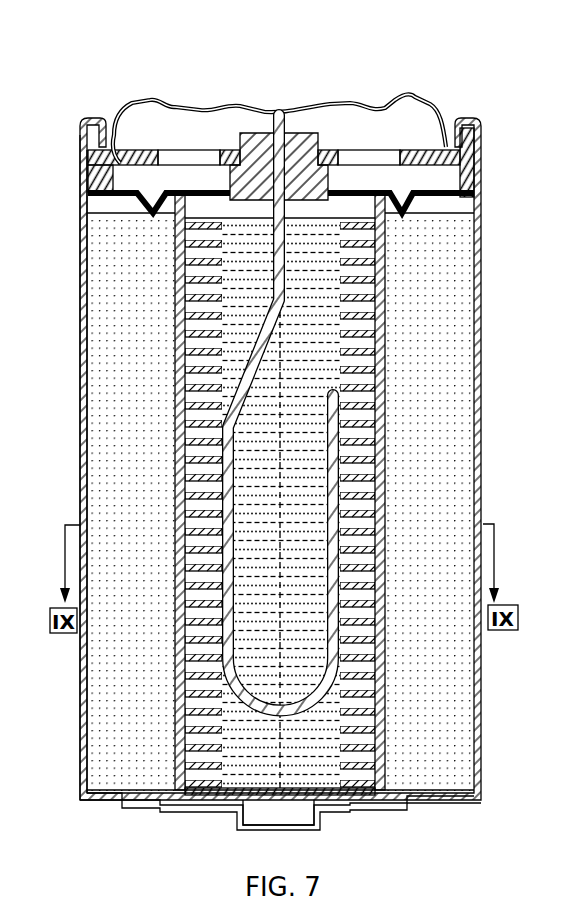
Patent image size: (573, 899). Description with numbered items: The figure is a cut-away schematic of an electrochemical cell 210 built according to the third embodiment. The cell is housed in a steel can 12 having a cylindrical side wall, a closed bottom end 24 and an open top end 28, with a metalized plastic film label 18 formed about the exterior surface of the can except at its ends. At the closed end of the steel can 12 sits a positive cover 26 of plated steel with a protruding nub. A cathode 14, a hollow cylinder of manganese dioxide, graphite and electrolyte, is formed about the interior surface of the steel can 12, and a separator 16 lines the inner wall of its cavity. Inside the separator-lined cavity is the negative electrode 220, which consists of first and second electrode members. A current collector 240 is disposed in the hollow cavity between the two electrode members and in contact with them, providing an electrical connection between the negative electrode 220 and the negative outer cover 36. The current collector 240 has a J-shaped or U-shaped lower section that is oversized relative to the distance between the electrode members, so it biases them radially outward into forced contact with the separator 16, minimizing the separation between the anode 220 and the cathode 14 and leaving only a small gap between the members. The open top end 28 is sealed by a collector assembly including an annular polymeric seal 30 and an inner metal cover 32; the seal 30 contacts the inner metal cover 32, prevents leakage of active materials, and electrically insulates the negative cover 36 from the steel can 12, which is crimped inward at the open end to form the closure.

The electrochemical cell 210 is at (283, 443).
The steel can 12 is at (85, 462).
The cathode 14 is at (111, 430).
The separator 16 is at (130, 378).
The label 18 is at (79, 500).
The negative electrode 220 is at (176, 312).
The closed bottom end 24 is at (272, 792).
The positive cover 26 is at (318, 826).
The open top end 28 is at (406, 131).
The annular polymeric seal 30 is at (237, 131).
The inner metal cover 32 is at (128, 133).
The negative outer cover 36 is at (175, 100).
The current collector 240 is at (280, 116).